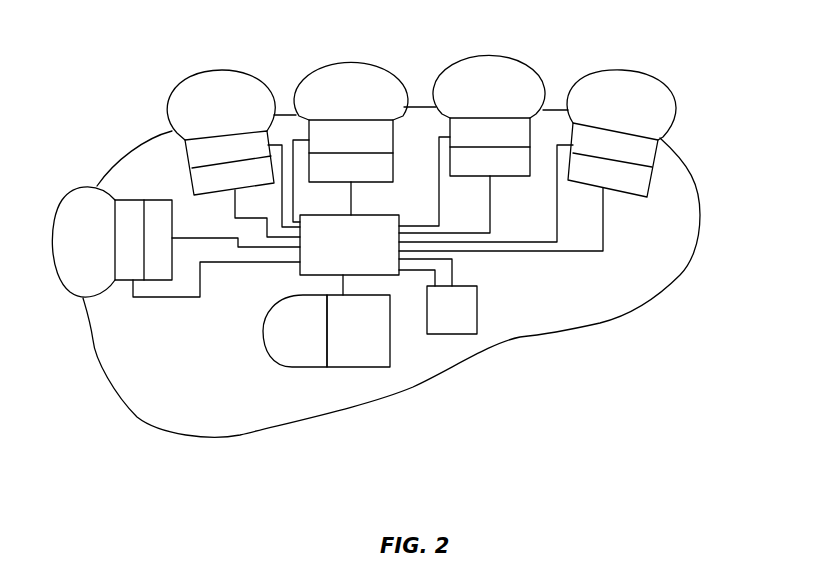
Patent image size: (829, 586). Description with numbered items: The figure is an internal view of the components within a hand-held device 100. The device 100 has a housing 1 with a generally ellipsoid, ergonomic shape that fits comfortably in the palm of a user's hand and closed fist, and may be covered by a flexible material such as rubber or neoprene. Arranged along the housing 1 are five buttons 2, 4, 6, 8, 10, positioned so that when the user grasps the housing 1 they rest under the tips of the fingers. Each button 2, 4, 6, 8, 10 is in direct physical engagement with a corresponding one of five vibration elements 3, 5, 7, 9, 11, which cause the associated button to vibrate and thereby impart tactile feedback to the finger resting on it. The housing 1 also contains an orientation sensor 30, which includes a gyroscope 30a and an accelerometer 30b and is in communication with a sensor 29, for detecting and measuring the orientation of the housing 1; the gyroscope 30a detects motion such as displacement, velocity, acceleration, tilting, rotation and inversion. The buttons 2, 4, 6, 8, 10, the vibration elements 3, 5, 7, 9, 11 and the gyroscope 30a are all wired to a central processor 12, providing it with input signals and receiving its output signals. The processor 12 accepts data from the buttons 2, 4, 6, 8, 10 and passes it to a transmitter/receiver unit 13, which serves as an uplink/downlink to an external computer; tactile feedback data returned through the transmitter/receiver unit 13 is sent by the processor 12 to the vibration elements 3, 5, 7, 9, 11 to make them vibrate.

The device 100 is at (430, 290).
The housing 1 is at (145, 388).
The button 2 is at (97, 296).
The vibration element 3 is at (153, 255).
The button 4 is at (182, 126).
The vibration element 5 is at (192, 183).
The button 6 is at (301, 101).
The vibration element 7 is at (315, 163).
The button 8 is at (442, 93).
The vibration element 9 is at (460, 155).
The button 10 is at (655, 119).
The vibration element 11 is at (627, 180).
The processor 12 is at (357, 262).
The transmitter/receiver unit 13 is at (477, 312).
The sensor 29 is at (290, 369).
The orientation sensor 30 is at (323, 395).
The gyroscope 30a is at (312, 353).
The accelerometer 30b is at (385, 343).